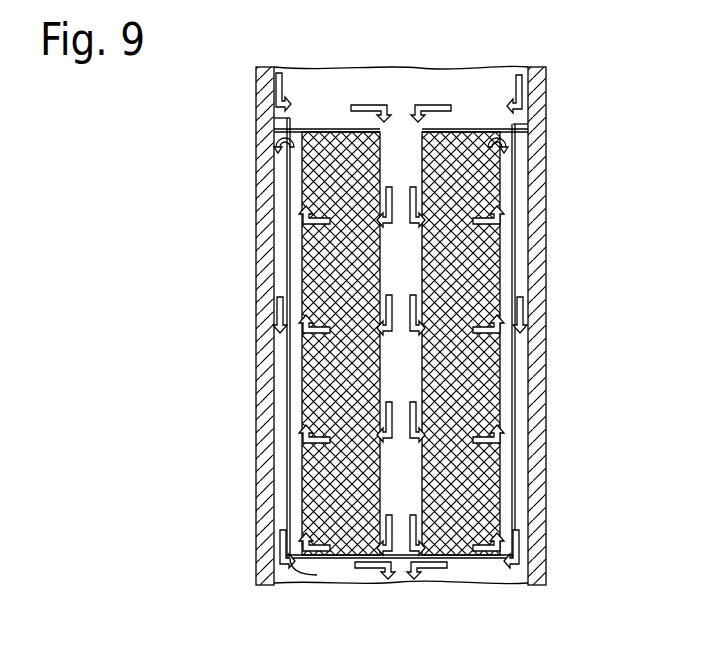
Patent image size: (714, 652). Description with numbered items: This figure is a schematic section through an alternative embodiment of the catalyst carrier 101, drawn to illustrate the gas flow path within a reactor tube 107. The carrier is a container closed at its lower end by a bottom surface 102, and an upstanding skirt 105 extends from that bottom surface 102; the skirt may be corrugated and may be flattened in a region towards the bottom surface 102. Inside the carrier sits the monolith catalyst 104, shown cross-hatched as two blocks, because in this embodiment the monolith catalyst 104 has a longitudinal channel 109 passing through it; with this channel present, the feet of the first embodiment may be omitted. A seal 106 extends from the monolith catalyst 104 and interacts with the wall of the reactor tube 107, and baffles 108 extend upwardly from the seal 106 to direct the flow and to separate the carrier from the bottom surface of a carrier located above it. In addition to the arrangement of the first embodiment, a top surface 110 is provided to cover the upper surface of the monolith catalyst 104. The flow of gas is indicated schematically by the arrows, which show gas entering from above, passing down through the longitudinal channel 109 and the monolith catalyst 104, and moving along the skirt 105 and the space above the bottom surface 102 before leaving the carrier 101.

The catalyst carrier 101 is at (288, 270).
The bottom surface 102 is at (300, 574).
The monolith catalyst 104 is at (480, 350).
The upstanding skirt 105 is at (522, 256).
The seal 106 is at (515, 127).
The reactor tube 107 is at (535, 172).
The baffles 108 is at (380, 125).
The longitudinal channel 109 is at (400, 163).
The top surface 110 is at (458, 130).